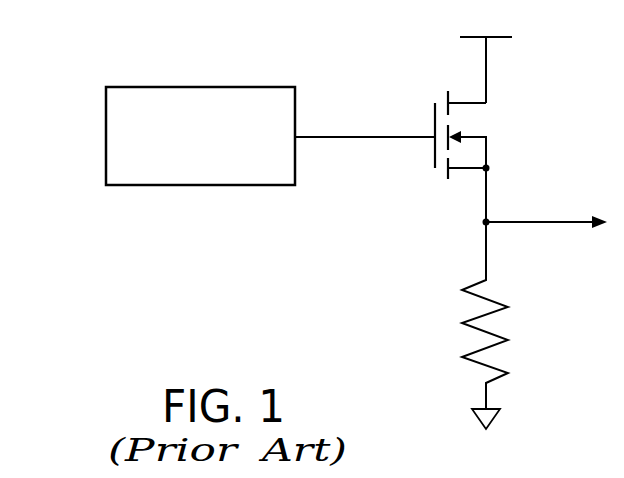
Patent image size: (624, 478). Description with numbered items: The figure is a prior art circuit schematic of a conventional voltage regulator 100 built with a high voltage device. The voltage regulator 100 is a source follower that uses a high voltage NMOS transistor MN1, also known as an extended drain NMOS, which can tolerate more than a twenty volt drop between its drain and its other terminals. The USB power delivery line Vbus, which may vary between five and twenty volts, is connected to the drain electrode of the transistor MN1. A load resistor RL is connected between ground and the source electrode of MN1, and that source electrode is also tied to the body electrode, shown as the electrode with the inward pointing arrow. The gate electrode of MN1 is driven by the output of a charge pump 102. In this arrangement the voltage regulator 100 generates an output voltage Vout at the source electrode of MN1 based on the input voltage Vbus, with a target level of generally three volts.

The voltage regulator 100 is at (66, 253).
The charge pump 102 is at (200, 136).
The high voltage NMOS transistor MN1 is at (493, 135).
The Vbus line Vbus is at (486, 57).
The output voltage Vout is at (545, 198).
The load resistor RL is at (506, 325).